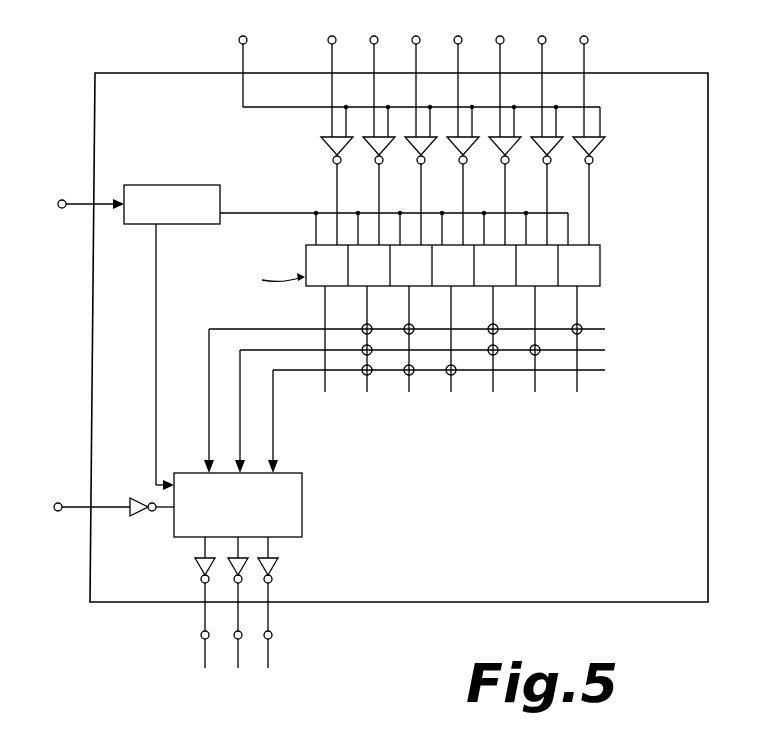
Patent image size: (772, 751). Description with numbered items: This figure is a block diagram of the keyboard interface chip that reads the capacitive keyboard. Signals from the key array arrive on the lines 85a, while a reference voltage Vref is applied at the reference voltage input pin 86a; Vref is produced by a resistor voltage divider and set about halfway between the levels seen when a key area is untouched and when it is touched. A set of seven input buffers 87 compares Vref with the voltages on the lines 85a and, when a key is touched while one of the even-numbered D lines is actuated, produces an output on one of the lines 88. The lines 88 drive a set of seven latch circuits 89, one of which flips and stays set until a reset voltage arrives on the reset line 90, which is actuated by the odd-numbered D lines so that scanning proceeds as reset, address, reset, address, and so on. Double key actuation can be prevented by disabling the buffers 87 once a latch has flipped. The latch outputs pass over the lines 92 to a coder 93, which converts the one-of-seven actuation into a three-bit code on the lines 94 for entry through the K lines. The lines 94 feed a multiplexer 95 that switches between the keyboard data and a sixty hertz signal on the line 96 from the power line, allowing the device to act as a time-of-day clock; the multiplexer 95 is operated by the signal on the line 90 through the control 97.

The lines 85a is at (546, 50).
The reference voltage input pin 86a is at (240, 42).
The input buffers 87 is at (551, 162).
The lines 88 is at (549, 195).
The latch circuits 89 is at (600, 264).
The reset line 90 is at (70, 210).
The lines 92 is at (537, 312).
The coder 93 is at (473, 363).
The lines 94 is at (240, 427).
The multiplexer 95 is at (302, 510).
The line 96 is at (72, 504).
The control 97 is at (180, 170).